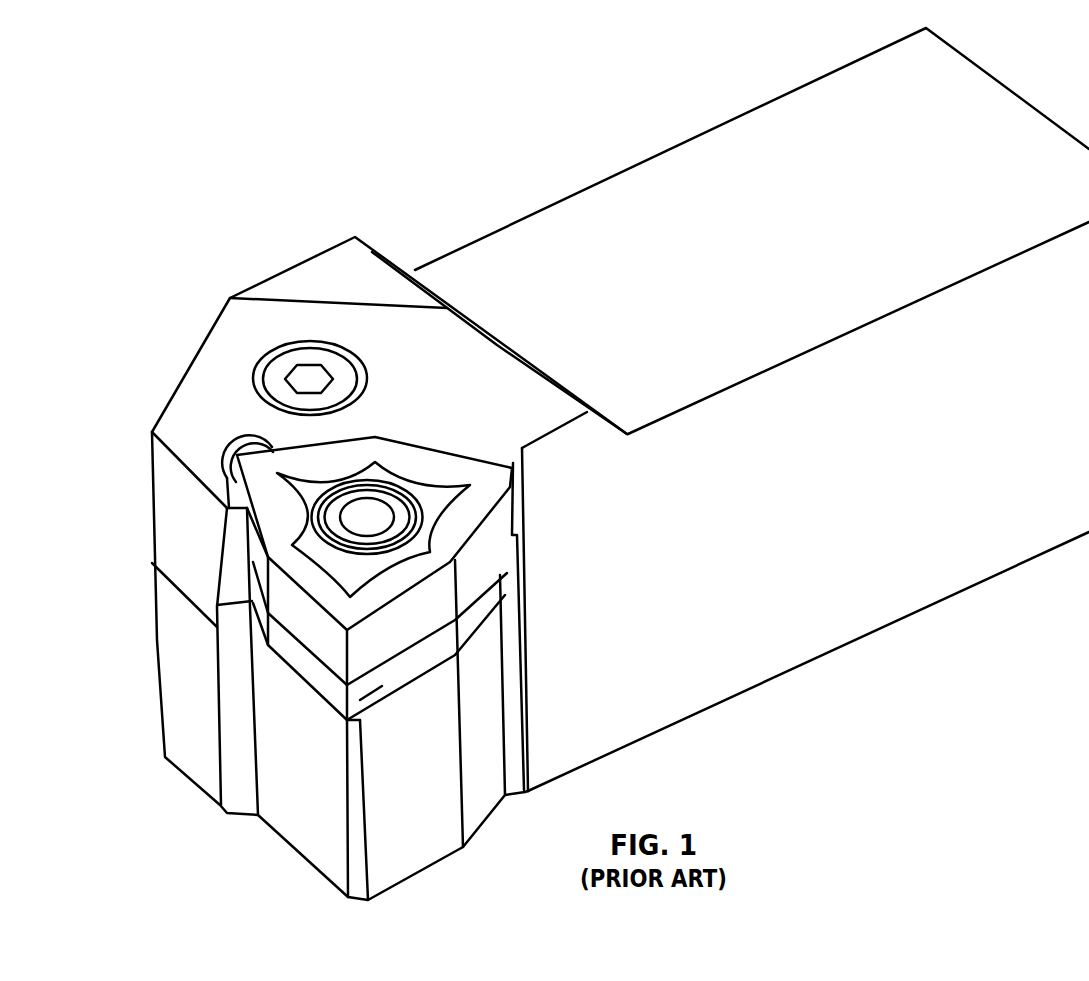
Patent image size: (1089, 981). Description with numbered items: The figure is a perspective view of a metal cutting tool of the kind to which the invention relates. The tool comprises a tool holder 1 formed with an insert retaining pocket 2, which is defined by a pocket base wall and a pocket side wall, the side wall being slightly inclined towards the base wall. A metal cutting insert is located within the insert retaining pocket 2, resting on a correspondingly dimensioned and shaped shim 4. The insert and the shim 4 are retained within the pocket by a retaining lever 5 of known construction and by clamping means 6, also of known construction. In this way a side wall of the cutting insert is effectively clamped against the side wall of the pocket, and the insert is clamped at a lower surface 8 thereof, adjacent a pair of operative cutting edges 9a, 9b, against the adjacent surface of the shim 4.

The tool holder 1 is at (594, 176).
The insert retaining pocket 2 is at (524, 527).
The shim 4 is at (329, 678).
The retaining lever 5 is at (361, 518).
The clamping means 6 is at (312, 378).
The lower surface 8 is at (382, 670).
The operative cutting edge 9a is at (303, 640).
The operative cutting edge 9b is at (397, 607).